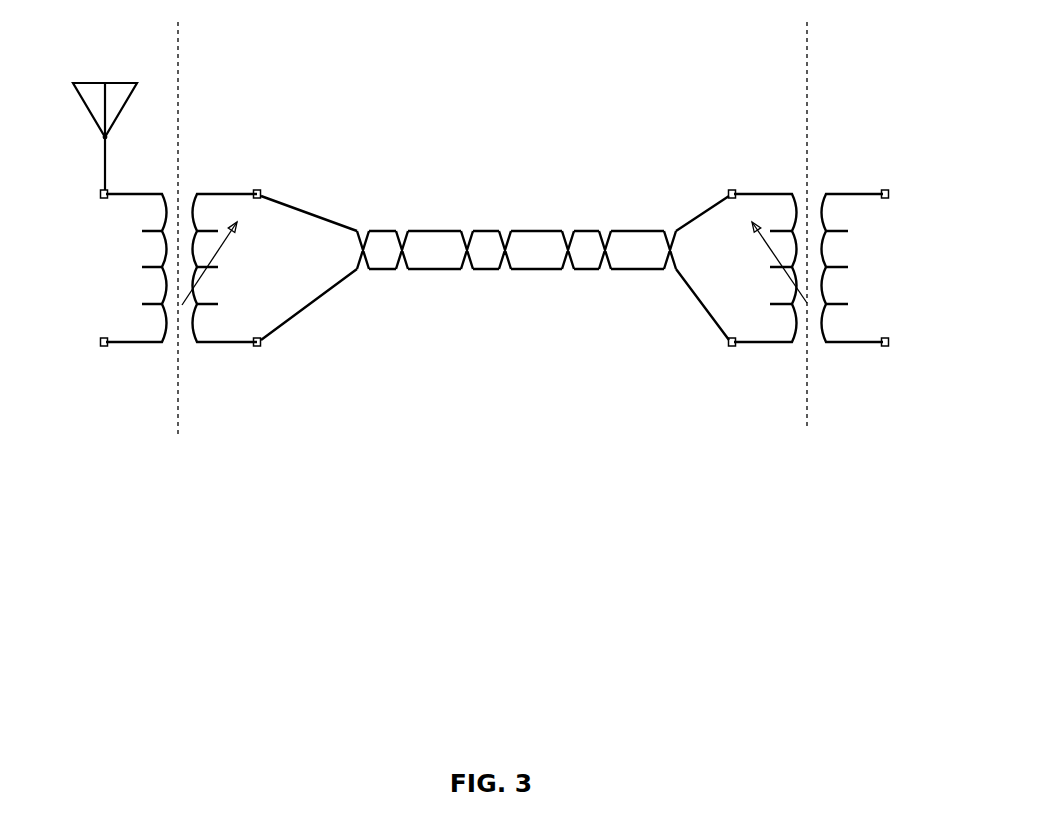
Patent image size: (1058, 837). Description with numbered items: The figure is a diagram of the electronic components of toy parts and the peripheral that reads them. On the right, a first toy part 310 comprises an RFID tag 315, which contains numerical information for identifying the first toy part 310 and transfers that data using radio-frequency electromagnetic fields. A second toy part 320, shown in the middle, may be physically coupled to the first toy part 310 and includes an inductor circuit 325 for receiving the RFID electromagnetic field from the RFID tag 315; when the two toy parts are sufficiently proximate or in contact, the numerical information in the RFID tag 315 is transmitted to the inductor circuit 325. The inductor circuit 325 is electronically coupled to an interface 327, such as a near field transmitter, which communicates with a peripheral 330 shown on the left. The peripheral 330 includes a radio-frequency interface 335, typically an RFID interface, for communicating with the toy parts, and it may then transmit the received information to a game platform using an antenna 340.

The antenna 340 is at (83, 83).
The radio-frequency interface 335 is at (123, 277).
The peripheral 330 is at (109, 220).
The interface 327 is at (259, 190).
The second toy part 320 is at (497, 260).
The inductor circuit 325 is at (730, 190).
The RFID tag 315 is at (870, 263).
The first toy part 310 is at (884, 226).